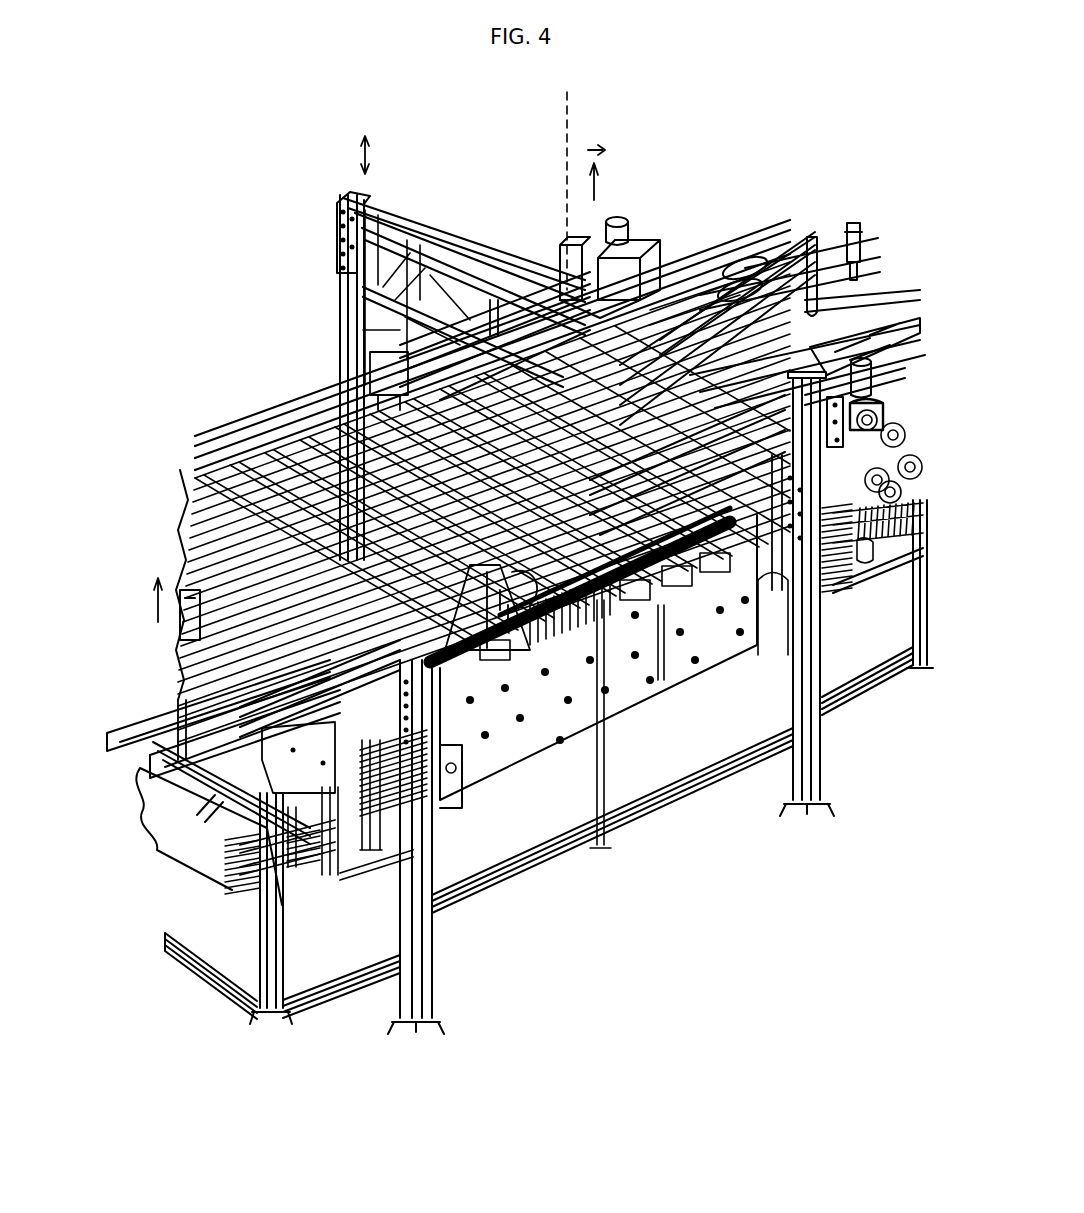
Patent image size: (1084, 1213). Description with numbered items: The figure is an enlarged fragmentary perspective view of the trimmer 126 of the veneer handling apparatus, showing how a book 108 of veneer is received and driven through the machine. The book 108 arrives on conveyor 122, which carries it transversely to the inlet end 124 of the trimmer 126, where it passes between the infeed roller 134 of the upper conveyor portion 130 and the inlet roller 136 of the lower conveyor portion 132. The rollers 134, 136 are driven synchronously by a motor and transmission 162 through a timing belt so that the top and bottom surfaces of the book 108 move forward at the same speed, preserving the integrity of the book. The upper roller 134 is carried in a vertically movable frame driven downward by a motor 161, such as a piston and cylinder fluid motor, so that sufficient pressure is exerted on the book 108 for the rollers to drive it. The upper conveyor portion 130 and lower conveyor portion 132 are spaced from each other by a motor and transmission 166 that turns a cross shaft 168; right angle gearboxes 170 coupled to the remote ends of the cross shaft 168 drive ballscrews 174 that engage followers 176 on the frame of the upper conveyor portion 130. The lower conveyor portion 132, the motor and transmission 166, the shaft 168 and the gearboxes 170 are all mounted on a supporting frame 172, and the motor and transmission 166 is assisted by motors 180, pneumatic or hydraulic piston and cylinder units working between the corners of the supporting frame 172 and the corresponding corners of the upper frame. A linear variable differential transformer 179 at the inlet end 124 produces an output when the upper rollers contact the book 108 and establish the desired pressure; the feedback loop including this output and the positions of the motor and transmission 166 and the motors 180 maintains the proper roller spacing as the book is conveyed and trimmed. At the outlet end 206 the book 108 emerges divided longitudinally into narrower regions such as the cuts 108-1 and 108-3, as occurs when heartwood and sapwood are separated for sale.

The book 108 is at (908, 296).
The narrower region of book 108-1 is at (138, 688).
The narrower region of book 108-3 is at (163, 798).
The conveyor 122 is at (780, 228).
The inlet end 124 is at (712, 234).
The trimmer 126 is at (270, 340).
The upper conveyor portion 130 is at (236, 402).
The lower conveyor portion 132 is at (644, 860).
The infeed roller 134 is at (672, 275).
The inlet roller 136 is at (772, 450).
The motor 161 is at (606, 245).
The motor and transmission 162 is at (845, 588).
The motor and transmission 166 is at (476, 300).
The cross shaft 168 is at (310, 433).
The right angle gearbox 170 is at (602, 245).
The supporting frame 172 is at (762, 785).
The ballscrew 174 is at (560, 290).
The follower 176 is at (628, 275).
The linear variable differential transformer (LVDT) 179 is at (563, 178).
The motor 180 is at (765, 655).
The outlet end 206 is at (105, 516).